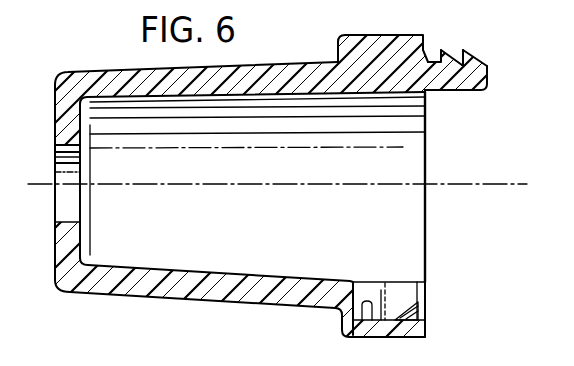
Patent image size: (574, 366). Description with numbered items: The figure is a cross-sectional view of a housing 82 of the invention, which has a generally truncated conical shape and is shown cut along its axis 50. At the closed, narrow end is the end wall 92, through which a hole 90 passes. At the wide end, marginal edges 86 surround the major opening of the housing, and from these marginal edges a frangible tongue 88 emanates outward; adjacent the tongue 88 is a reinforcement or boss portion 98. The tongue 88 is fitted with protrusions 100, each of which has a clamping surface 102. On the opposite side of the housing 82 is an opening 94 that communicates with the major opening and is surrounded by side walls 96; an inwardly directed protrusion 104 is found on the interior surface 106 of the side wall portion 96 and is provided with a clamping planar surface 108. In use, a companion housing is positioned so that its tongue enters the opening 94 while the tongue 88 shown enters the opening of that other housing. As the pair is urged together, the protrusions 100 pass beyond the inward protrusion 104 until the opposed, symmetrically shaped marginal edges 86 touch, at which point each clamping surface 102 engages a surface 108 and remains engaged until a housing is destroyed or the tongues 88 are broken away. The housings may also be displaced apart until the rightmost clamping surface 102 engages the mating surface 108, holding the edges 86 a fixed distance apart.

The central axis 50 is at (512, 182).
The housing 82 is at (295, 64).
The marginal edges 86 is at (427, 151).
The tongue 88 is at (487, 88).
The hole 90 is at (53, 172).
The end wall 92 is at (55, 255).
The opening 94 is at (403, 295).
The side walls 96 is at (388, 332).
The reinforcement or boss portion 98 is at (405, 36).
The protrusions 100 is at (445, 50).
The clamping surfaces 102 is at (440, 55).
The inwardly directed protrusion 104 is at (403, 333).
The interior surface 106 is at (352, 312).
The clamping planar surface 108 is at (380, 308).